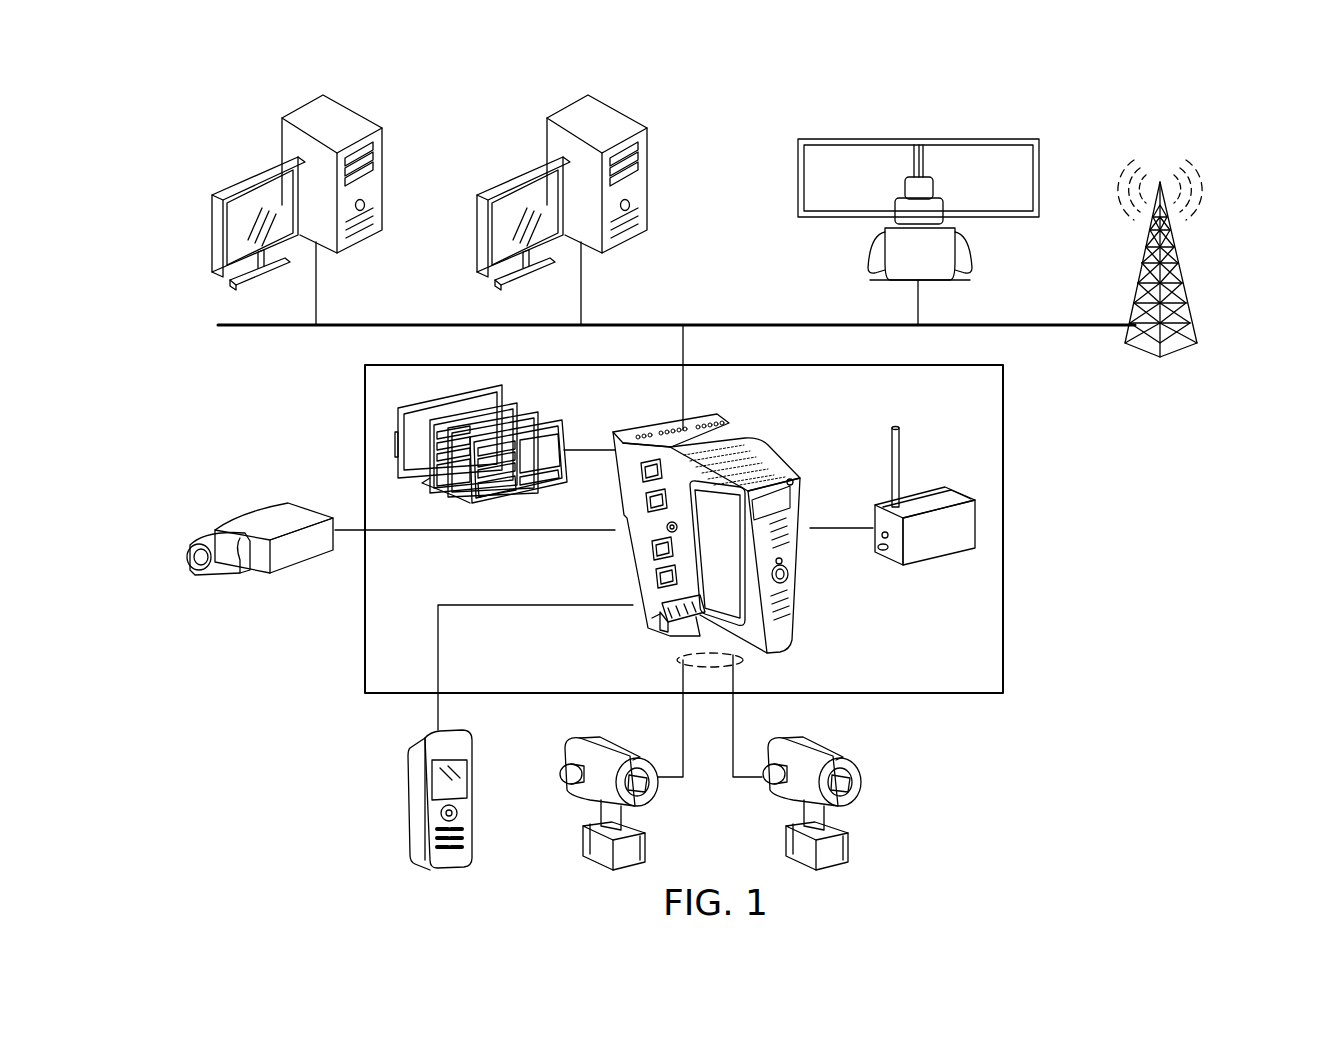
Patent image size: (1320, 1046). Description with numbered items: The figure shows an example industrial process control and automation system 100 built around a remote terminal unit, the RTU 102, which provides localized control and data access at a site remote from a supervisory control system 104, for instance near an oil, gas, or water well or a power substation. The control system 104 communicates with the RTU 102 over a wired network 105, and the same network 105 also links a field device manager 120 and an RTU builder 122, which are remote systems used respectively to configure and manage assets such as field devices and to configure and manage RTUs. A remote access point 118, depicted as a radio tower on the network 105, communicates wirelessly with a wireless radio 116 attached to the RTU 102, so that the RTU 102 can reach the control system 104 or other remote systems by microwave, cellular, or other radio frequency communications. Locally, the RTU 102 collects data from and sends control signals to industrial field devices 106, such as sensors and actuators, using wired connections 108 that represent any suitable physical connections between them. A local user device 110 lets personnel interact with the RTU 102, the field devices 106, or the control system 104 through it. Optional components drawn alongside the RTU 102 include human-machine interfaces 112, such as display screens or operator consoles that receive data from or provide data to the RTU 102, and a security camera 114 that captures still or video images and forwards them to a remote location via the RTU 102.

The industrial process control and automation system 100 is at (1131, 634).
The remote terminal unit (RTU) 102 is at (636, 560).
The control system 104 is at (952, 138).
The wired network 105 is at (752, 320).
The industrial field devices 106 is at (565, 838).
The wired connections 108 is at (677, 660).
The local user device 110 is at (410, 808).
The human-machine interfaces (HMIs) 112 is at (570, 422).
The security cameras 114 is at (268, 515).
The wireless radio 116 is at (947, 553).
The remote access point 118 is at (1182, 266).
The field device manager (FDM) 120 is at (250, 152).
The RTU builder 122 is at (515, 152).